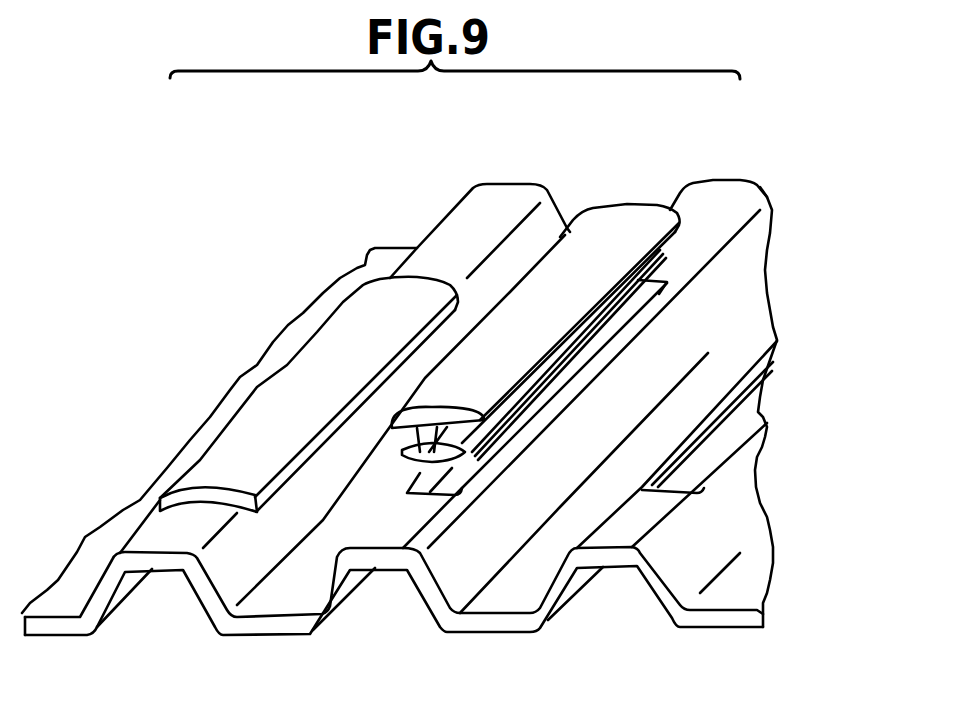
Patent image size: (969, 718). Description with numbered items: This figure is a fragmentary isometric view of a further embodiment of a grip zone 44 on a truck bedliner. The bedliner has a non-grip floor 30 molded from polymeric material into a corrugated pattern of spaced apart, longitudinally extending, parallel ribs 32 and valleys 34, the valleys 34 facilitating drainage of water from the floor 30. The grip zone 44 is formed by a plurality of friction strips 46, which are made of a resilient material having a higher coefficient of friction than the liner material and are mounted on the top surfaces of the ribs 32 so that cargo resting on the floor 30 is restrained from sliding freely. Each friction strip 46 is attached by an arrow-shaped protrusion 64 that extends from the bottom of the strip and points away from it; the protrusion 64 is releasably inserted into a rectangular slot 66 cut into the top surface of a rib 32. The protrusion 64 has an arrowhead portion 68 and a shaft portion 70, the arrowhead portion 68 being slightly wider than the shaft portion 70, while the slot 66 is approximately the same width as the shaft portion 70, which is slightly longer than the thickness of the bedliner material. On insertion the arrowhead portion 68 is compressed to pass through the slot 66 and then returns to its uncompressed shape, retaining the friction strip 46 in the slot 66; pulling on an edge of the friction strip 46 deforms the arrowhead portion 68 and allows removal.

The floor 30 is at (387, 260).
The ribs 32 is at (503, 212).
The valleys 34 is at (278, 600).
The grip zone 44 is at (630, 190).
The friction strips 46 is at (312, 378).
The arrow-shaped protrusion 64 is at (400, 469).
The rectangular slot 66 is at (545, 392).
The arrowhead portion 68 is at (410, 441).
The shaft portion 70 is at (447, 407).